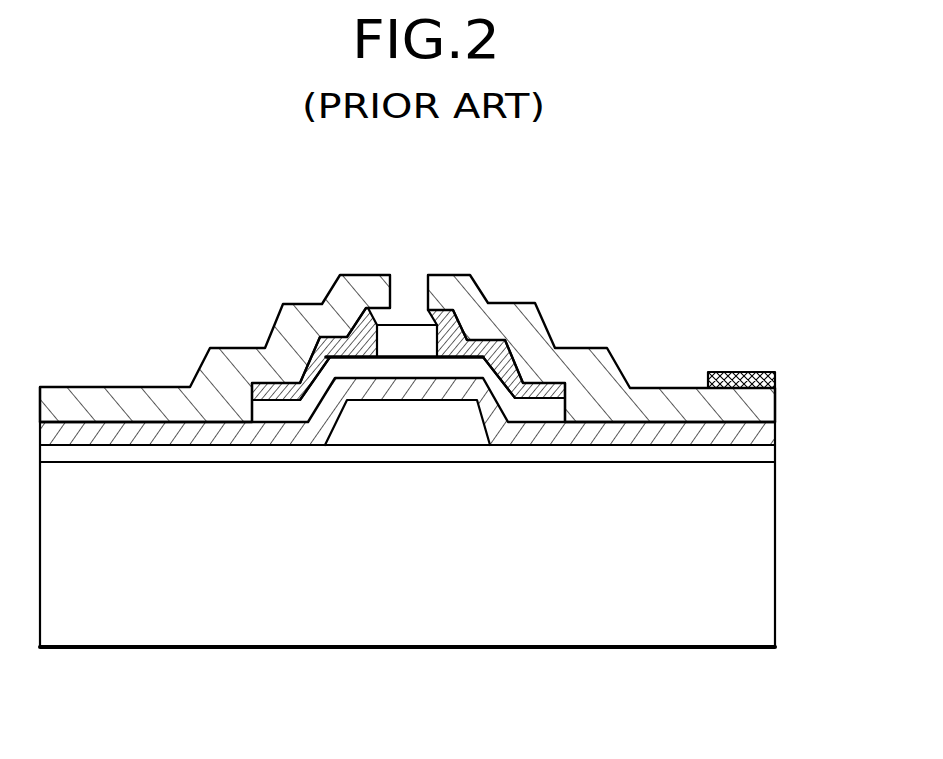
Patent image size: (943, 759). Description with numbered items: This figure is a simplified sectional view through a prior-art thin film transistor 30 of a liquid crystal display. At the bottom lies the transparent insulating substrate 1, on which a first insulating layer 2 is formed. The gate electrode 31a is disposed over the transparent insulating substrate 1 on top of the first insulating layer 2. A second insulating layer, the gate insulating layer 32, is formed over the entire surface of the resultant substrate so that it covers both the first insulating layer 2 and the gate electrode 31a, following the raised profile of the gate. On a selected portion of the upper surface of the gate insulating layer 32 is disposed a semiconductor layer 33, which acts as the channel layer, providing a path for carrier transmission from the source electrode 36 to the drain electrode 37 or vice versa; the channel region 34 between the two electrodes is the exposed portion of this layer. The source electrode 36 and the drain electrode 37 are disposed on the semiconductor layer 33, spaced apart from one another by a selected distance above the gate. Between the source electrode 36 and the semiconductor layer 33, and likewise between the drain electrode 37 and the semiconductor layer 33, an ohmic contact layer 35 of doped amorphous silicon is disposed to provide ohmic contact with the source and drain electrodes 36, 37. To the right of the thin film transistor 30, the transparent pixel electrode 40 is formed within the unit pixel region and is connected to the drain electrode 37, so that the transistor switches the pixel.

The transparent insulating substrate 1 is at (760, 612).
The first insulating layer 2 is at (767, 452).
The thin film transistor 30 is at (82, 264).
The gate electrode 31a is at (457, 415).
The gate insulating layer 32 is at (767, 433).
The semiconductor layer 33 is at (483, 333).
The semiconductor channel layer 34 is at (433, 338).
The ohmic contact layer 35 is at (300, 348).
The source electrode 36 is at (227, 358).
The drain electrode 37 is at (610, 402).
The transparent pixel electrode 40 is at (738, 372).